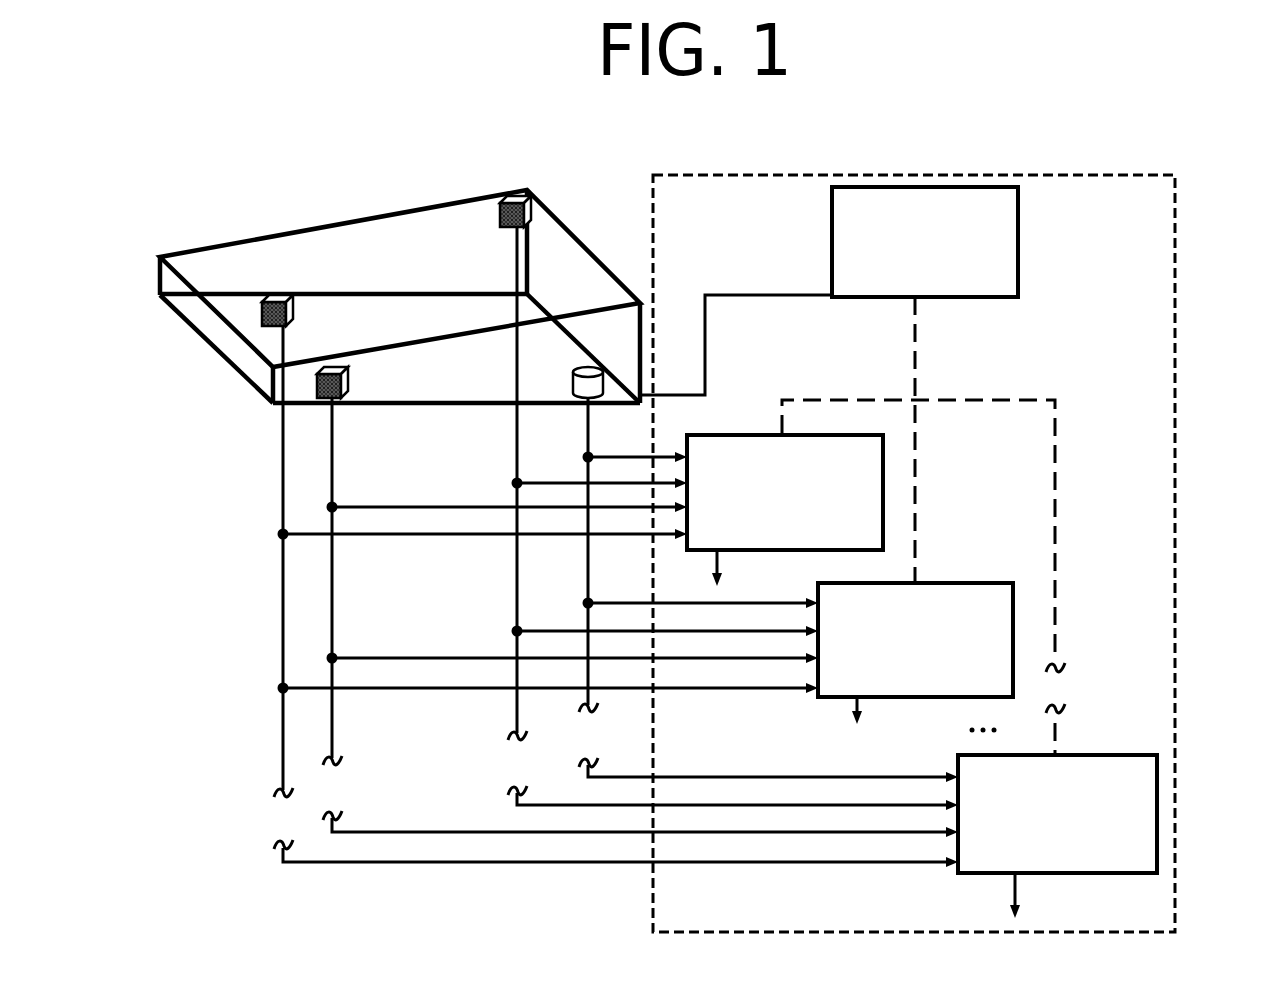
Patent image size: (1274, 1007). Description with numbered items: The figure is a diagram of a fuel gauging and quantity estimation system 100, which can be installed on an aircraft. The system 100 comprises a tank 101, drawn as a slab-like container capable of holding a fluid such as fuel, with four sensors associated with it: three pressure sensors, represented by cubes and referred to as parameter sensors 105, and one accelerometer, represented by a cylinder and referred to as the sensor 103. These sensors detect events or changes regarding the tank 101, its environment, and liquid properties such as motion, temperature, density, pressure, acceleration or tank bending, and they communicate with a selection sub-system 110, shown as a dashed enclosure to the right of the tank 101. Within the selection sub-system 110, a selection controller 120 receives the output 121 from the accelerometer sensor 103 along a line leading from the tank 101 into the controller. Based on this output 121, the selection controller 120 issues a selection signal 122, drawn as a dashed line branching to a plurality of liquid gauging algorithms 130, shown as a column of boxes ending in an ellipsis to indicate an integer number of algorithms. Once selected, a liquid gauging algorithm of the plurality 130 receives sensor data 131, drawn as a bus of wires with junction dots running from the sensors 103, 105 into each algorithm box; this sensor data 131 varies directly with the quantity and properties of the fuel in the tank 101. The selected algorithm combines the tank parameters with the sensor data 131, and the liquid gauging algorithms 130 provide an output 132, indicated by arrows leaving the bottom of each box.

The fuel gauging and quantity estimation system 100 is at (1170, 118).
The tank 101 is at (373, 215).
The sensor 103 is at (588, 366).
The parameter sensors 105 is at (528, 194).
The selection sub-system 110 is at (1137, 217).
The selection controller 120 is at (945, 239).
The output 121 is at (720, 292).
The selection signal 122 is at (919, 374).
The liquid gauging algorithms 130 is at (922, 654).
The sensor data 131 is at (232, 699).
The output 132 is at (723, 562).